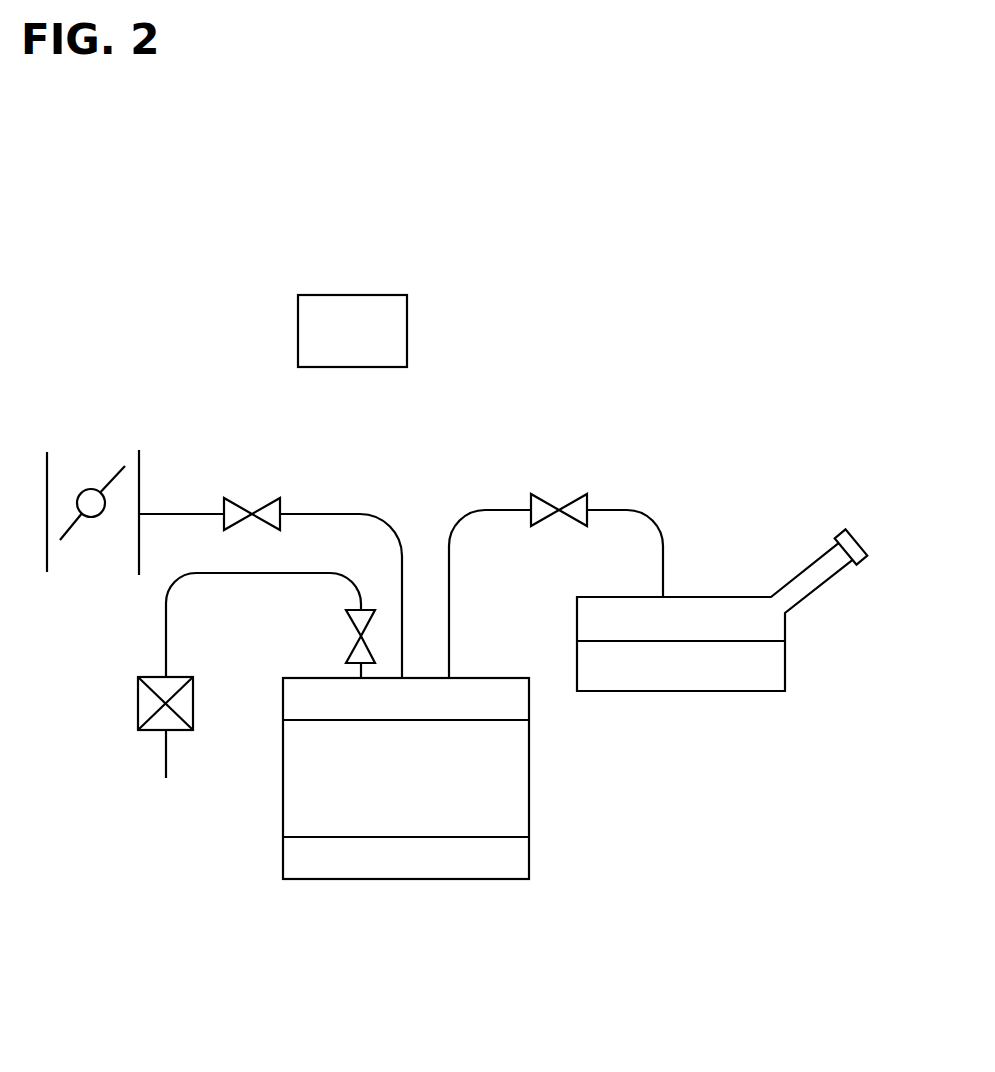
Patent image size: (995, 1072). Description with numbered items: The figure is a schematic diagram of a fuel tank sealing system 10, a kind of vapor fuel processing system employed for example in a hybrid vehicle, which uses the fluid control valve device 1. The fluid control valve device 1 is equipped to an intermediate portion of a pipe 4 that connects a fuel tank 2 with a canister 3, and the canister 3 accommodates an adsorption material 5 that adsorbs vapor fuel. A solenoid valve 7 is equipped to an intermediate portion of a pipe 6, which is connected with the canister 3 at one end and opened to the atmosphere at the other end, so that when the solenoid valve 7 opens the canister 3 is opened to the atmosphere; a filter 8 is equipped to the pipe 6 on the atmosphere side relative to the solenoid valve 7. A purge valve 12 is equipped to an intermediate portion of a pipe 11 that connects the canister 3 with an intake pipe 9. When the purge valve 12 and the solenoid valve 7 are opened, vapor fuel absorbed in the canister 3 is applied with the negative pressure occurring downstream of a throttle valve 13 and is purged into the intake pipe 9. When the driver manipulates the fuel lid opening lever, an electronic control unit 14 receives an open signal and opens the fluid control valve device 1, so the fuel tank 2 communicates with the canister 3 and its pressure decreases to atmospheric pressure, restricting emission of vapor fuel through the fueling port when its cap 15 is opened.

The fluid control valve device 1 is at (580, 498).
The fuel tank 2 is at (756, 691).
The canister 3 is at (531, 857).
The pipe 4 is at (643, 510).
The adsorption material 5 is at (513, 778).
The pipe 6 is at (160, 627).
The solenoid valve 7 is at (352, 618).
The filter 8 is at (138, 708).
The intake pipe 9 is at (140, 465).
The fuel tank sealing system 10 is at (657, 247).
The pipe 11 is at (355, 513).
The purge valve 12 is at (268, 500).
The throttle valve 13 is at (120, 470).
The electronic control unit (ECU) 14 is at (348, 295).
The cap 15 is at (853, 530).